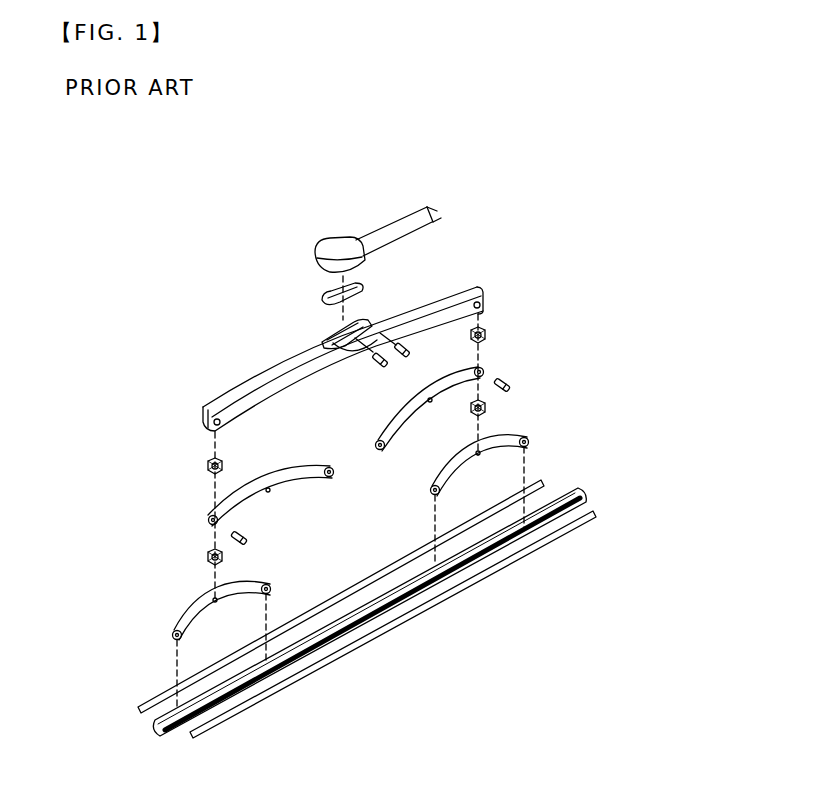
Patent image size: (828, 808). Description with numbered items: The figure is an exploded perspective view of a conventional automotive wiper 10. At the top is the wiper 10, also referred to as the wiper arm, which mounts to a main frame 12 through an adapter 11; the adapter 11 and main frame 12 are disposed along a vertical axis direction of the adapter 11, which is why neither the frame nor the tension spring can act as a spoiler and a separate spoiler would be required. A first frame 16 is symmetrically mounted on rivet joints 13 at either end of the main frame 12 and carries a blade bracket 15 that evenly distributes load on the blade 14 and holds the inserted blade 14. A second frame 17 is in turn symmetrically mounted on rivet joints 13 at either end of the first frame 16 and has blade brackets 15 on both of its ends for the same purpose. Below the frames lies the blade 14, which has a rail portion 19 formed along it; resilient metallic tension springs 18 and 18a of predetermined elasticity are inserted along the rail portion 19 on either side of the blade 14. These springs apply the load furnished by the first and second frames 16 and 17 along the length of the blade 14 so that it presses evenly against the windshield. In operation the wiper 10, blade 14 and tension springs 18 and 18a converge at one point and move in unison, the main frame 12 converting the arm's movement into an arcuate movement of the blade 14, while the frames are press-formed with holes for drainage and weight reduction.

The wiper 10 is at (330, 244).
The adapter 11 is at (328, 296).
The main frame 12 is at (464, 282).
The rivet joints 13 is at (487, 333).
The blade 14 is at (590, 489).
The blade bracket 15 is at (377, 444).
The first frame 16 is at (489, 368).
The second frame 17 is at (534, 436).
The tension spring 18 is at (192, 733).
The tension spring 18a is at (138, 707).
The rail portion 19 is at (153, 725).